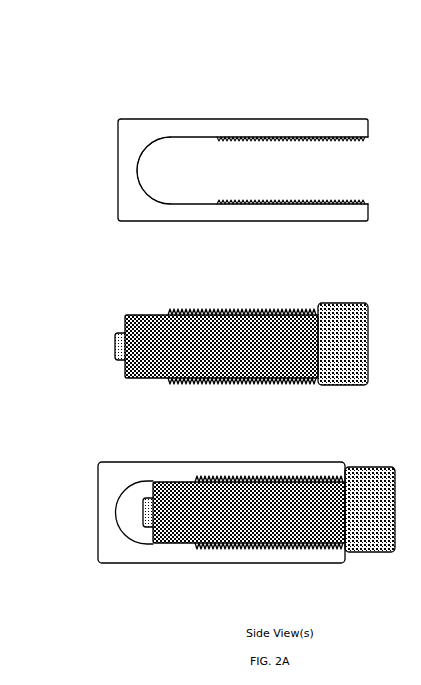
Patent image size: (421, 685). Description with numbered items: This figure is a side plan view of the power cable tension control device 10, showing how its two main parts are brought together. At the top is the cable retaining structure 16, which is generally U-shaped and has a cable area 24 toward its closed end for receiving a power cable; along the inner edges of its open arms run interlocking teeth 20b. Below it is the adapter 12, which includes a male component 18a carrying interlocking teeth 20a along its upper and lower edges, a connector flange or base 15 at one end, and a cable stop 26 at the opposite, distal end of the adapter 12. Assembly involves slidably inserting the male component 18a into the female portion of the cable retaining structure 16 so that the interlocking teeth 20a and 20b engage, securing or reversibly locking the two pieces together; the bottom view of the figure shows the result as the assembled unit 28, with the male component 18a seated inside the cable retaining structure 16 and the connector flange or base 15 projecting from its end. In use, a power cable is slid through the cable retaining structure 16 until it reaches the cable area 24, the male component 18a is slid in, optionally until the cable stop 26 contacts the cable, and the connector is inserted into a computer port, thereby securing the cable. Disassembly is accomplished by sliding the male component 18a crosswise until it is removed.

The power cable tension control device 10 is at (135, 58).
The cable retaining structure 16 is at (210, 164).
The interlocking teeth 20b is at (341, 132).
The cable area 24 is at (173, 172).
The adapter 12 is at (224, 360).
The cable stop 26 is at (115, 338).
The male component 18a is at (230, 360).
The interlocking teeth 20a is at (226, 310).
The connector flange or base 15 is at (346, 339).
The assembled unit 28 is at (79, 502).